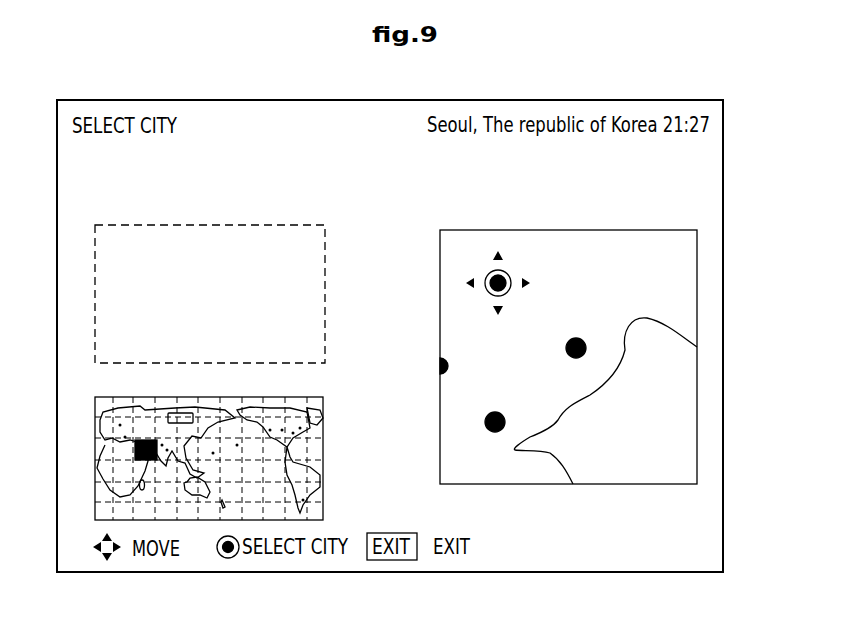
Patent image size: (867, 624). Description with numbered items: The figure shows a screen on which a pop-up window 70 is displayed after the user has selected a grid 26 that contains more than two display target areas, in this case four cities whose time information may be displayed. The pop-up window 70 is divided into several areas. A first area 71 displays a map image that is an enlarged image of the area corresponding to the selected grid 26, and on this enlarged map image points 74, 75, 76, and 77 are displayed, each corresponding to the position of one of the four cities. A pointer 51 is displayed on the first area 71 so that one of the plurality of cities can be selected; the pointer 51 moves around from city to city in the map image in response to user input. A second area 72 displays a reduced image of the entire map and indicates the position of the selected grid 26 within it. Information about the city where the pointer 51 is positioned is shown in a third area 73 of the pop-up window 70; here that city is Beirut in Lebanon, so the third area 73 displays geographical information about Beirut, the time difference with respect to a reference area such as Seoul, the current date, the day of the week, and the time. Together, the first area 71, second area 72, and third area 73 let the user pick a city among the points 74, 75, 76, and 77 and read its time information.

The pop-up window 70 is at (723, 282).
The first area 71 is at (697, 366).
The second area 72 is at (95, 432).
The third area 73 is at (244, 222).
The point 74 is at (510, 294).
The point 75 is at (580, 338).
The point 76 is at (491, 432).
The point 77 is at (437, 366).
The pointer 51 is at (500, 256).
The grid 26 is at (135, 458).